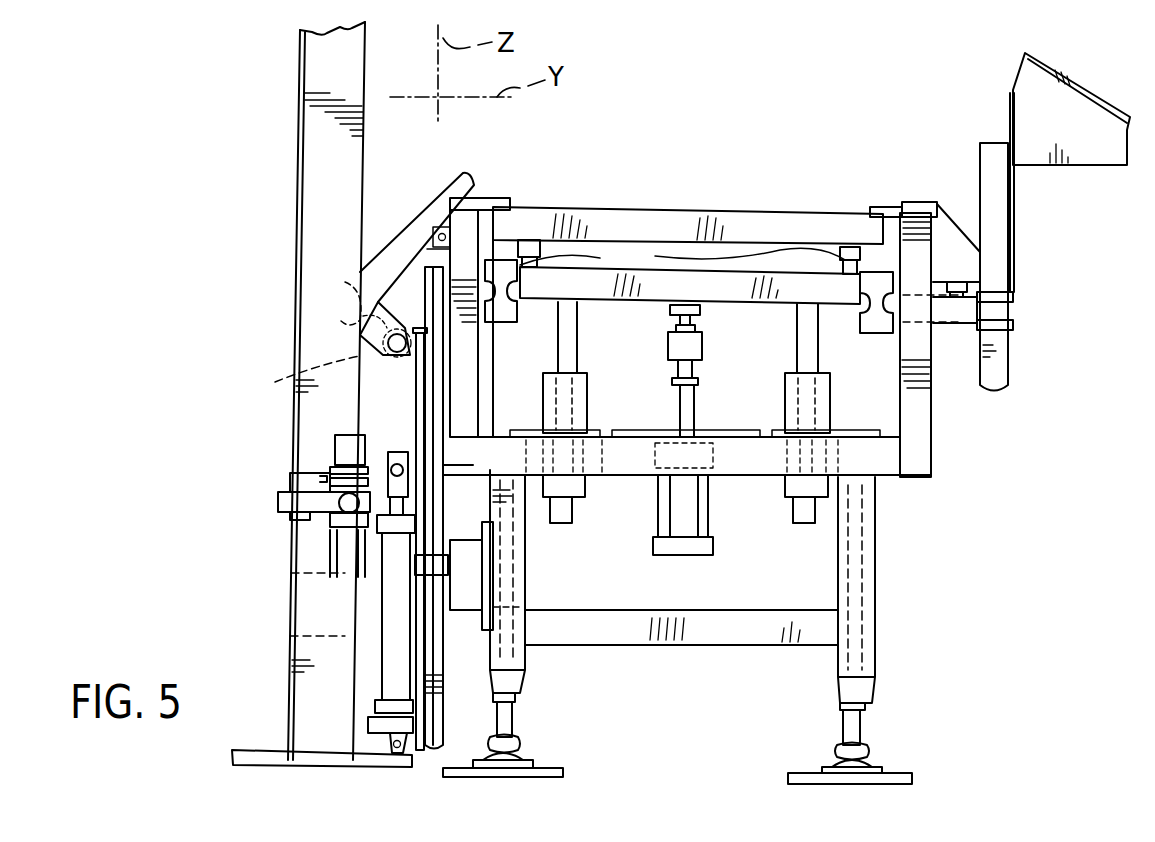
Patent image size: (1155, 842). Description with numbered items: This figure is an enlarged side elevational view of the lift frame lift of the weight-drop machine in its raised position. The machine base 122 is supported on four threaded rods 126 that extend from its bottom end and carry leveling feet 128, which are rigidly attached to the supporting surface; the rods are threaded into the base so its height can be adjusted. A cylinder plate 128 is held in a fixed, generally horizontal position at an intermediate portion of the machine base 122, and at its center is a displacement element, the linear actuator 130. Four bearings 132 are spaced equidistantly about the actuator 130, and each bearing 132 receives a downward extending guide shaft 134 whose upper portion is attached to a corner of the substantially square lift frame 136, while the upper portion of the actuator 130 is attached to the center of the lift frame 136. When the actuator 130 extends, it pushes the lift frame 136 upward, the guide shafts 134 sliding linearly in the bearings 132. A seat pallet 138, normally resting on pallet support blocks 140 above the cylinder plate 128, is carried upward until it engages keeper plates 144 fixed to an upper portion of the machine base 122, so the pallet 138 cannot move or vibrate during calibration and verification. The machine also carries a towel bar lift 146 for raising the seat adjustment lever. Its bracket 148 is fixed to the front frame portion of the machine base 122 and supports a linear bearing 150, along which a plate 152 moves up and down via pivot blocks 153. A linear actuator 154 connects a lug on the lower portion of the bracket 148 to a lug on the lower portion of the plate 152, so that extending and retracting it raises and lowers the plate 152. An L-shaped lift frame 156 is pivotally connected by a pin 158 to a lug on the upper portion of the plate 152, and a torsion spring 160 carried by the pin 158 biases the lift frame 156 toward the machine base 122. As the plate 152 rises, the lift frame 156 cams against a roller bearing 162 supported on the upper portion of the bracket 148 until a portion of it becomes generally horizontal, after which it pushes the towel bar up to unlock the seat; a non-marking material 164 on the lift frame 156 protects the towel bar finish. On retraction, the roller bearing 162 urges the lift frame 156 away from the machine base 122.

The machine base 122 is at (993, 620).
The threaded rods 126 is at (513, 723).
The leveling feet / cylinder plate 128 is at (888, 425).
The linear actuator 130 is at (550, 520).
The bearings 132 is at (584, 489).
The guide shaft 134 is at (832, 520).
The lift frame 136 is at (880, 237).
The seat pallet 138 is at (597, 208).
The pallet support blocks 140 is at (560, 343).
The keeper plates 144 is at (493, 196).
The towel bar lift 146 is at (312, 270).
The bracket 148 is at (445, 350).
The linear bearing 150 is at (362, 293).
The plate 152 is at (330, 468).
The pivot blocks 153 is at (440, 437).
The linear actuator 154 is at (380, 693).
The L-shaped lift frame 156 is at (400, 233).
The pin 158 is at (388, 440).
The torsion spring 160 is at (275, 382).
The roller bearing 162 is at (425, 225).
The non-marking material 164 is at (360, 272).